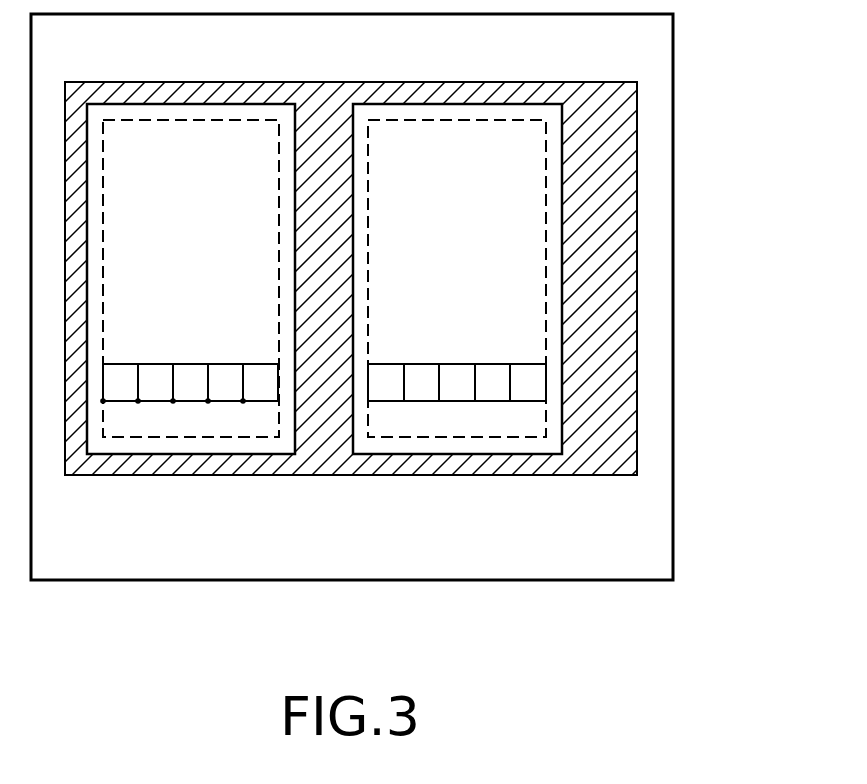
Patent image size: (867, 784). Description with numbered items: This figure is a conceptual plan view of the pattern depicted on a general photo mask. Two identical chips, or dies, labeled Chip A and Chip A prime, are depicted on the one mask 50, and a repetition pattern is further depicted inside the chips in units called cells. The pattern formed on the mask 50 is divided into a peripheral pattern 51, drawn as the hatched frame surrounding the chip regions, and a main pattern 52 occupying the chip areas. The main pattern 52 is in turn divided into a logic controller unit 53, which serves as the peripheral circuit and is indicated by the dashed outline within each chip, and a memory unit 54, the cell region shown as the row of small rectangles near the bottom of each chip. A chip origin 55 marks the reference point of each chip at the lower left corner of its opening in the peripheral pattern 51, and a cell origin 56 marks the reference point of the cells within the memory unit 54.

The mask 50 is at (673, 518).
The peripheral pattern 51 is at (603, 410).
The main pattern 52 is at (525, 192).
The logic controller unit 53 is at (553, 290).
The memory unit 54 is at (260, 390).
The chip origin 55 is at (86, 454).
The cell origin 56 is at (103, 401).